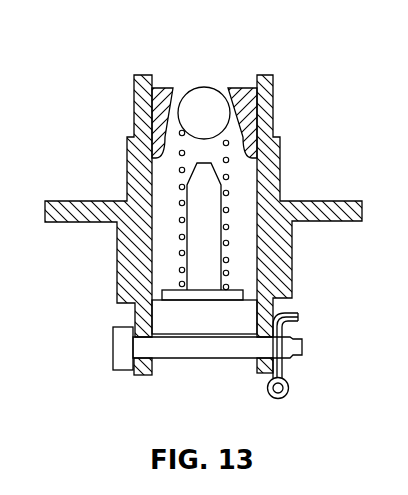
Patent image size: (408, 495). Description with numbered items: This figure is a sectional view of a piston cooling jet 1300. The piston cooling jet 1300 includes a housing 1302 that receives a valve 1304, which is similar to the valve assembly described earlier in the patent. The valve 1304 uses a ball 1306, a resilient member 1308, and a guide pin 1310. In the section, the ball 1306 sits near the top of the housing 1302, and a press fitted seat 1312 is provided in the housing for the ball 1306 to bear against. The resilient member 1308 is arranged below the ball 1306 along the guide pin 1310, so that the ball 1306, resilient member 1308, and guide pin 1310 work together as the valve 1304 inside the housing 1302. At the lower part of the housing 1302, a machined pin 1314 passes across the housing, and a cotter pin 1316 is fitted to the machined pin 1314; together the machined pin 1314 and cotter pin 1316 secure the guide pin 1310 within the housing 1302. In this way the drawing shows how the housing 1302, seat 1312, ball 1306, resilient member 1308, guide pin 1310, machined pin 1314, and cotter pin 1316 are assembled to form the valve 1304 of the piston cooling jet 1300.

The piston cooling jet 1300 is at (200, 213).
The housing 1302 is at (270, 203).
The valve 1304 is at (121, 165).
The ball 1306 is at (202, 86).
The resilient member 1308 is at (182, 252).
The guide pin 1310 is at (215, 268).
The press fitted seat 1312 is at (238, 108).
The machined pin 1314 is at (180, 353).
The cotter pin 1316 is at (289, 390).